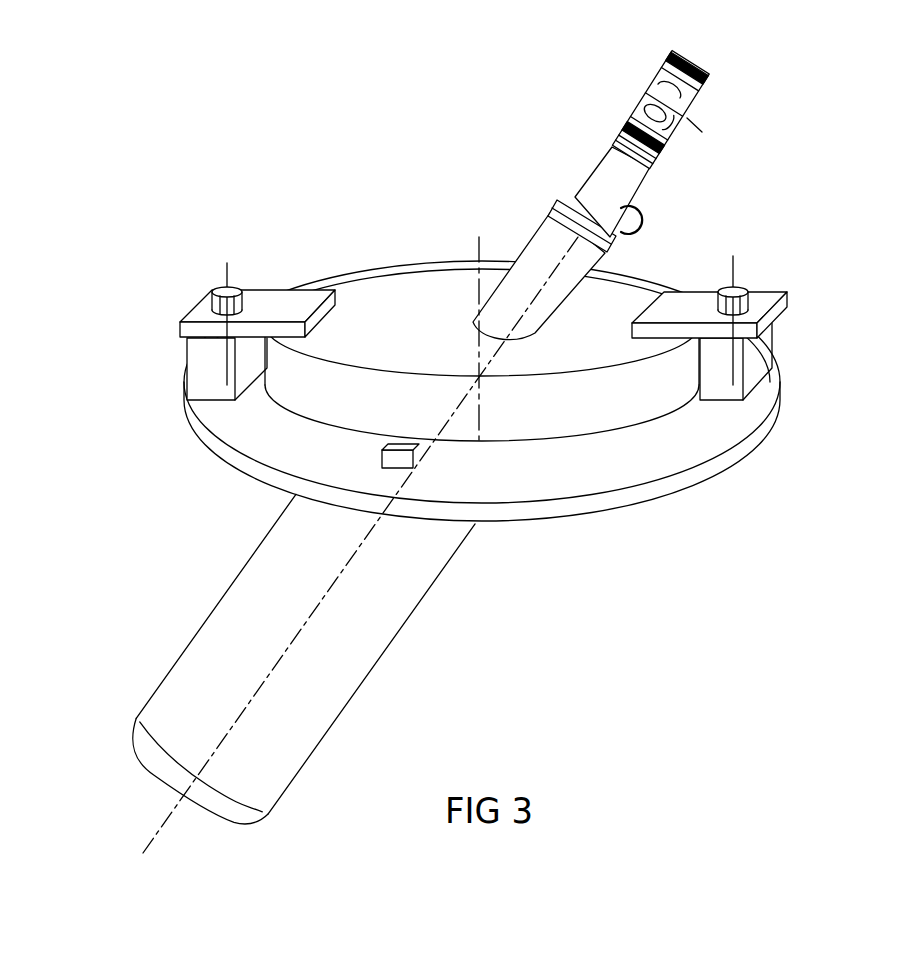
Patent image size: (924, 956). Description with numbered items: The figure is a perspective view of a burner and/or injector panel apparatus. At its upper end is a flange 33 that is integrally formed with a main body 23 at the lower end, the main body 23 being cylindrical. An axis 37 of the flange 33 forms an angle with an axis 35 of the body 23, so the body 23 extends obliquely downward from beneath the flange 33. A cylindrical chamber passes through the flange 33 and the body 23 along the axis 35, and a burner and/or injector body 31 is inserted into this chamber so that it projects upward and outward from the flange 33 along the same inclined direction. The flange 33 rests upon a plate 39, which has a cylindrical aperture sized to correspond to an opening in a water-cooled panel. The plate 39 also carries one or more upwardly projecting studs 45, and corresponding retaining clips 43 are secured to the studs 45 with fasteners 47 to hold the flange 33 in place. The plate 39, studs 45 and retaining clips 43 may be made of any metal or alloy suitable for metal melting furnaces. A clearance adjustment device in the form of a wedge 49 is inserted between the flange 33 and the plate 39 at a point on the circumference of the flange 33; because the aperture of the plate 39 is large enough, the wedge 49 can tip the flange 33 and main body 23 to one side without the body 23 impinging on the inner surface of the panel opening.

The main body 23 is at (360, 663).
The burner and/or injector body 31 is at (535, 262).
The flange 33 is at (403, 297).
The axis of body 35 is at (157, 828).
The axis of the flange 37 is at (480, 247).
The plate 39 is at (630, 462).
The retaining clip 43 is at (273, 307).
The stud 45 is at (205, 368).
The fastener 47 is at (222, 300).
The wedge 49 is at (393, 460).